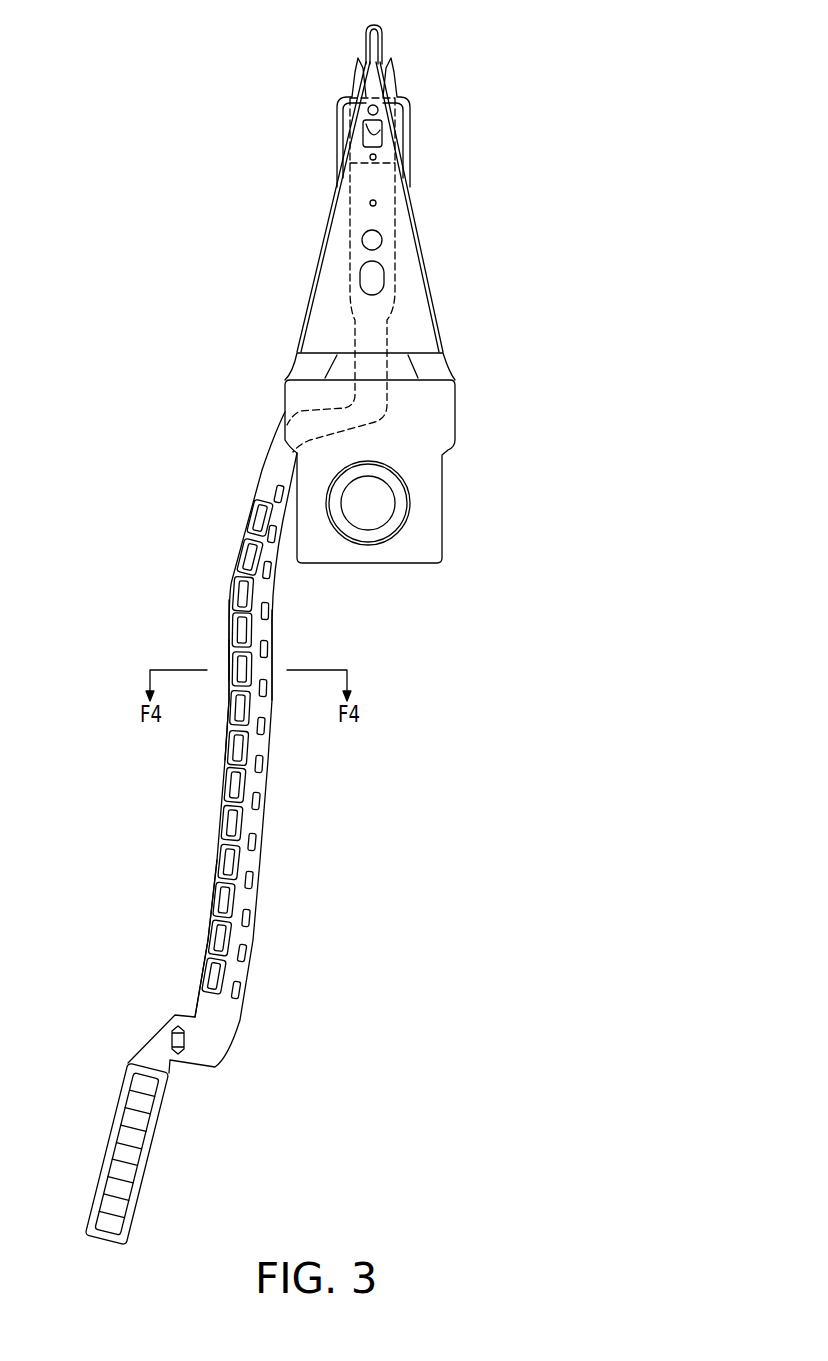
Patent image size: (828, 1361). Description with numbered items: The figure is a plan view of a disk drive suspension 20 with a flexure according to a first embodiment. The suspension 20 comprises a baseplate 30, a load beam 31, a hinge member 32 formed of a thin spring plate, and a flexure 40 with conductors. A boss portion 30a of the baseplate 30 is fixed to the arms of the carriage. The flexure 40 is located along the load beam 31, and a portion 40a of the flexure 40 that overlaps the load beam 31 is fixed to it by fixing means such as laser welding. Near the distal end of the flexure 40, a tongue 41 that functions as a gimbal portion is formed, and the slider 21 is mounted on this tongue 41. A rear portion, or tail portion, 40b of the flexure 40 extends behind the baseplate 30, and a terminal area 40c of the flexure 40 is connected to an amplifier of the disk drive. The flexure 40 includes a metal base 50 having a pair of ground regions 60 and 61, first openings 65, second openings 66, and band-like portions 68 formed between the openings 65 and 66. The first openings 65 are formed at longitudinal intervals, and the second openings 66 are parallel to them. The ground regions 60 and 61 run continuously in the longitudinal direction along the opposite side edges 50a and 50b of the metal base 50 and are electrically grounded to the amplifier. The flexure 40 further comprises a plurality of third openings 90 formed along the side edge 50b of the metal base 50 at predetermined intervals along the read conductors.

The suspension 20 is at (246, 208).
The slider 21 is at (410, 113).
The tongue 41 is at (372, 130).
The flexure 40 is at (392, 230).
The portion of the flexure 40a is at (347, 297).
The load beam 31 is at (417, 292).
The hinge member 32 is at (447, 363).
The baseplate 30 is at (437, 433).
The boss portion 30a is at (400, 517).
The band-like portions 68 is at (250, 546).
The first openings 65 is at (235, 590).
The second openings 66 is at (252, 596).
The metal base 50 is at (258, 632).
The side edge 50a is at (233, 636).
The side edge 50b is at (273, 648).
The ground region 61 is at (258, 672).
The ground region 60 is at (230, 687).
The third openings 90 is at (265, 768).
The rear portion 40b is at (216, 903).
The terminal area 40c is at (125, 1150).